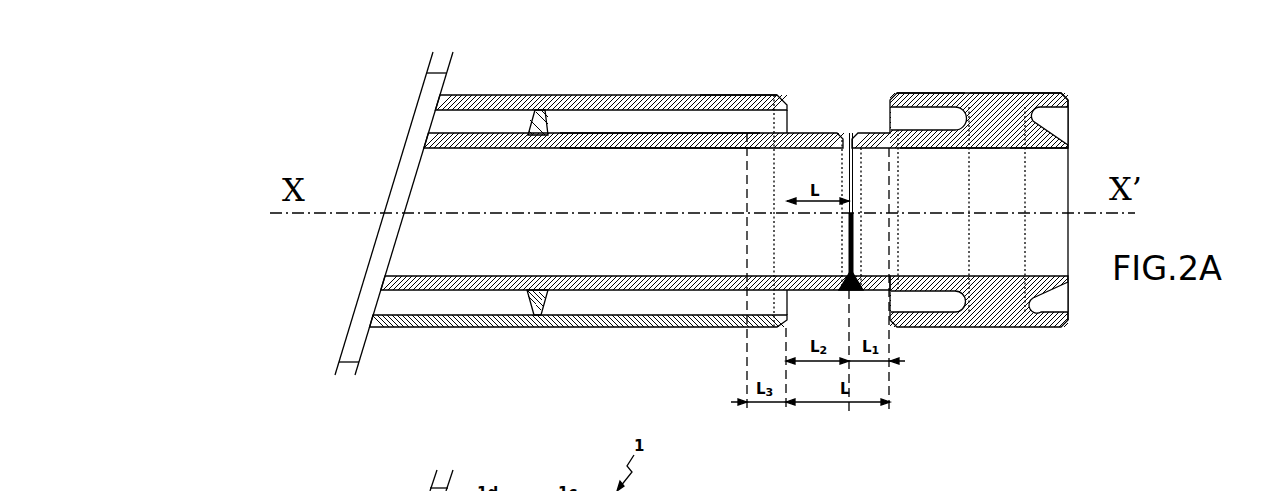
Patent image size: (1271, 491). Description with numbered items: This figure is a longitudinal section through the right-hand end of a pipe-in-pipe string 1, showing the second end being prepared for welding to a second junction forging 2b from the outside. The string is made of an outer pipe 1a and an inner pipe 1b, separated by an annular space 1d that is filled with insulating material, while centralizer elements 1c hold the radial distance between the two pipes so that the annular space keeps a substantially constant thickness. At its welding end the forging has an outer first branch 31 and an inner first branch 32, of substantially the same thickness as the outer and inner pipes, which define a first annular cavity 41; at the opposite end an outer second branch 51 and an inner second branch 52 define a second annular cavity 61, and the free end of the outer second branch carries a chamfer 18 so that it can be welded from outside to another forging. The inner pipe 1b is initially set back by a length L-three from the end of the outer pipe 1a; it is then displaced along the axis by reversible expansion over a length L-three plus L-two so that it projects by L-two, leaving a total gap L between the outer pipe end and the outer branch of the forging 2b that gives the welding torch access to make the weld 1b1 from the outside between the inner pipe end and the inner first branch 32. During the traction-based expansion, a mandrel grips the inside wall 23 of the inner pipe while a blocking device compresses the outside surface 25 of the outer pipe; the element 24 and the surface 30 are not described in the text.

The PiP type pipe 1 is at (604, 91).
The outer pipe 1a is at (690, 100).
The inner pipe 1b is at (671, 149).
The weld 1b1 is at (854, 291).
The centralizer element 1c is at (549, 122).
The annular space 1d is at (491, 121).
The chamfer 18 is at (1068, 328).
The inside wall 23 is at (616, 149).
The outer surface of inner tube 24 is at (652, 132).
The outside surface 25 is at (750, 94).
The second junction forging 2b is at (996, 340).
The flange outer surface 30 is at (1020, 93).
The outer first branch 31 is at (931, 100).
The inner first branch 32 is at (944, 149).
The first annular cavity 41 is at (928, 122).
The outer second branch 51 is at (1058, 94).
The inner second branch 52 is at (1048, 149).
The second annular cavity 61 is at (1056, 121).